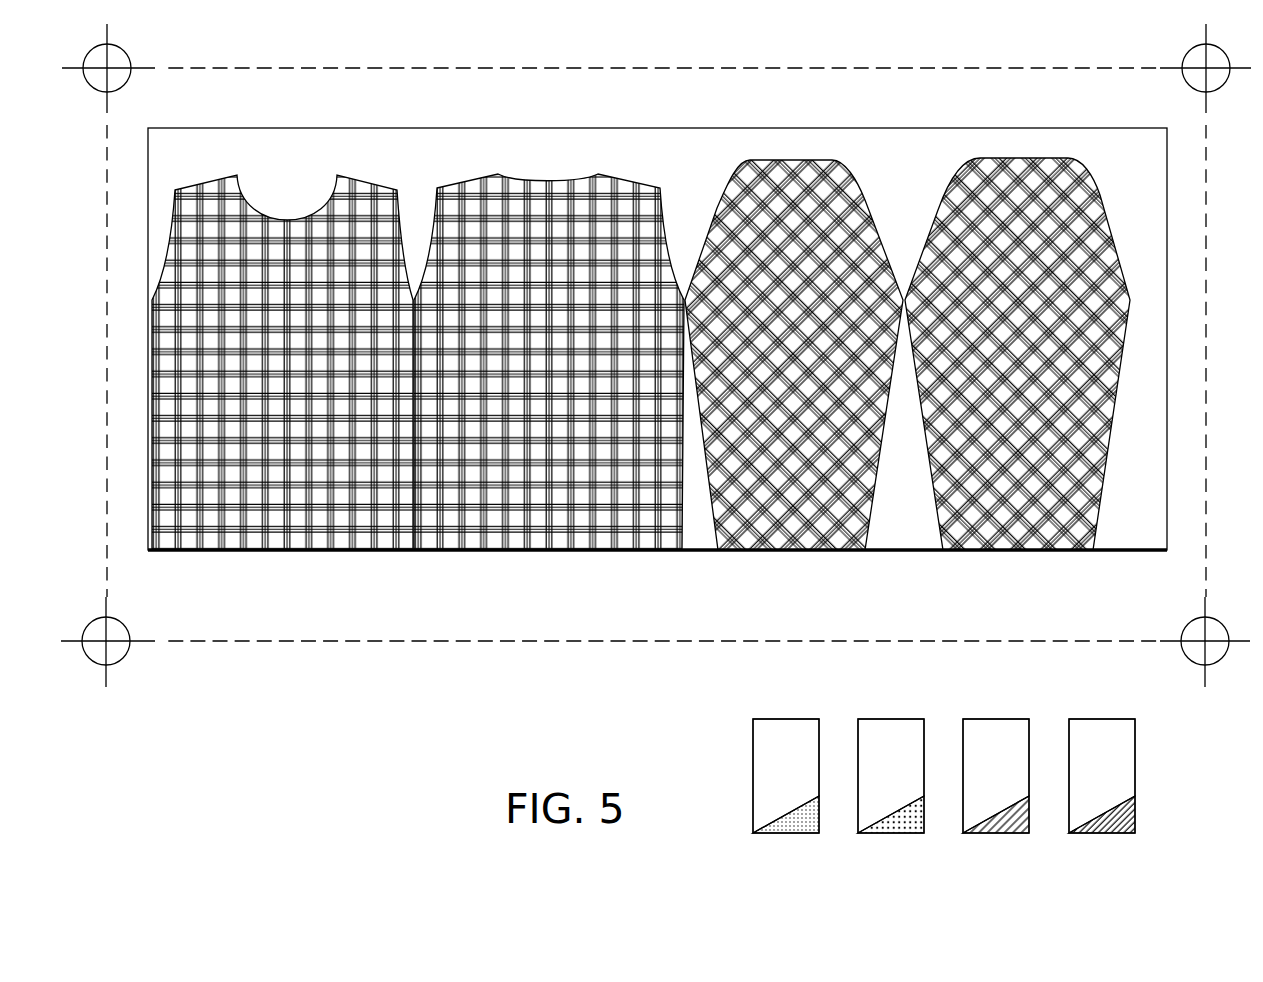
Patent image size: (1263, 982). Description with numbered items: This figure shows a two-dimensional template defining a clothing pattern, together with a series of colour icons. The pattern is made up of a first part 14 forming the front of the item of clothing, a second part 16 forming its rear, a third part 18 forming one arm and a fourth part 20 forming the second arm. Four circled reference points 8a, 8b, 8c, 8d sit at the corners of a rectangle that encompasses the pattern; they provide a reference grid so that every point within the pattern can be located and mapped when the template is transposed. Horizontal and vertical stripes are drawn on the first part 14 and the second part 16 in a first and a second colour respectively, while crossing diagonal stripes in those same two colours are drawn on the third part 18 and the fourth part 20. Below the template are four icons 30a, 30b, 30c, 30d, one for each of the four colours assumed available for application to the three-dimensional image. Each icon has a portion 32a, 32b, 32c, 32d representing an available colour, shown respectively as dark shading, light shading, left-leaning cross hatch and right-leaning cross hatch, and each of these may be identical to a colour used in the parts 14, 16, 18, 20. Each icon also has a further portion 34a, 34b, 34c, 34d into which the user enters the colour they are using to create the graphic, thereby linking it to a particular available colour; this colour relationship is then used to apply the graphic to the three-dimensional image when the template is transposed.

The reference point 8a is at (85, 80).
The reference point 8b is at (1223, 85).
The reference point 8c is at (1212, 632).
The reference point 8d is at (95, 632).
The first part 14 is at (290, 546).
The second part 16 is at (560, 536).
The third part 18 is at (775, 542).
The fourth part 20 is at (1030, 546).
The icon 30a is at (757, 835).
The icon 30b is at (862, 835).
The icon 30c is at (967, 835).
The icon 30d is at (1073, 835).
The portion 32a is at (802, 828).
The portion 32b is at (907, 828).
The portion 32c is at (1012, 828).
The portion 32d is at (1118, 828).
The portion 34a is at (787, 726).
The portion 34b is at (892, 726).
The portion 34c is at (997, 726).
The portion 34d is at (1103, 726).